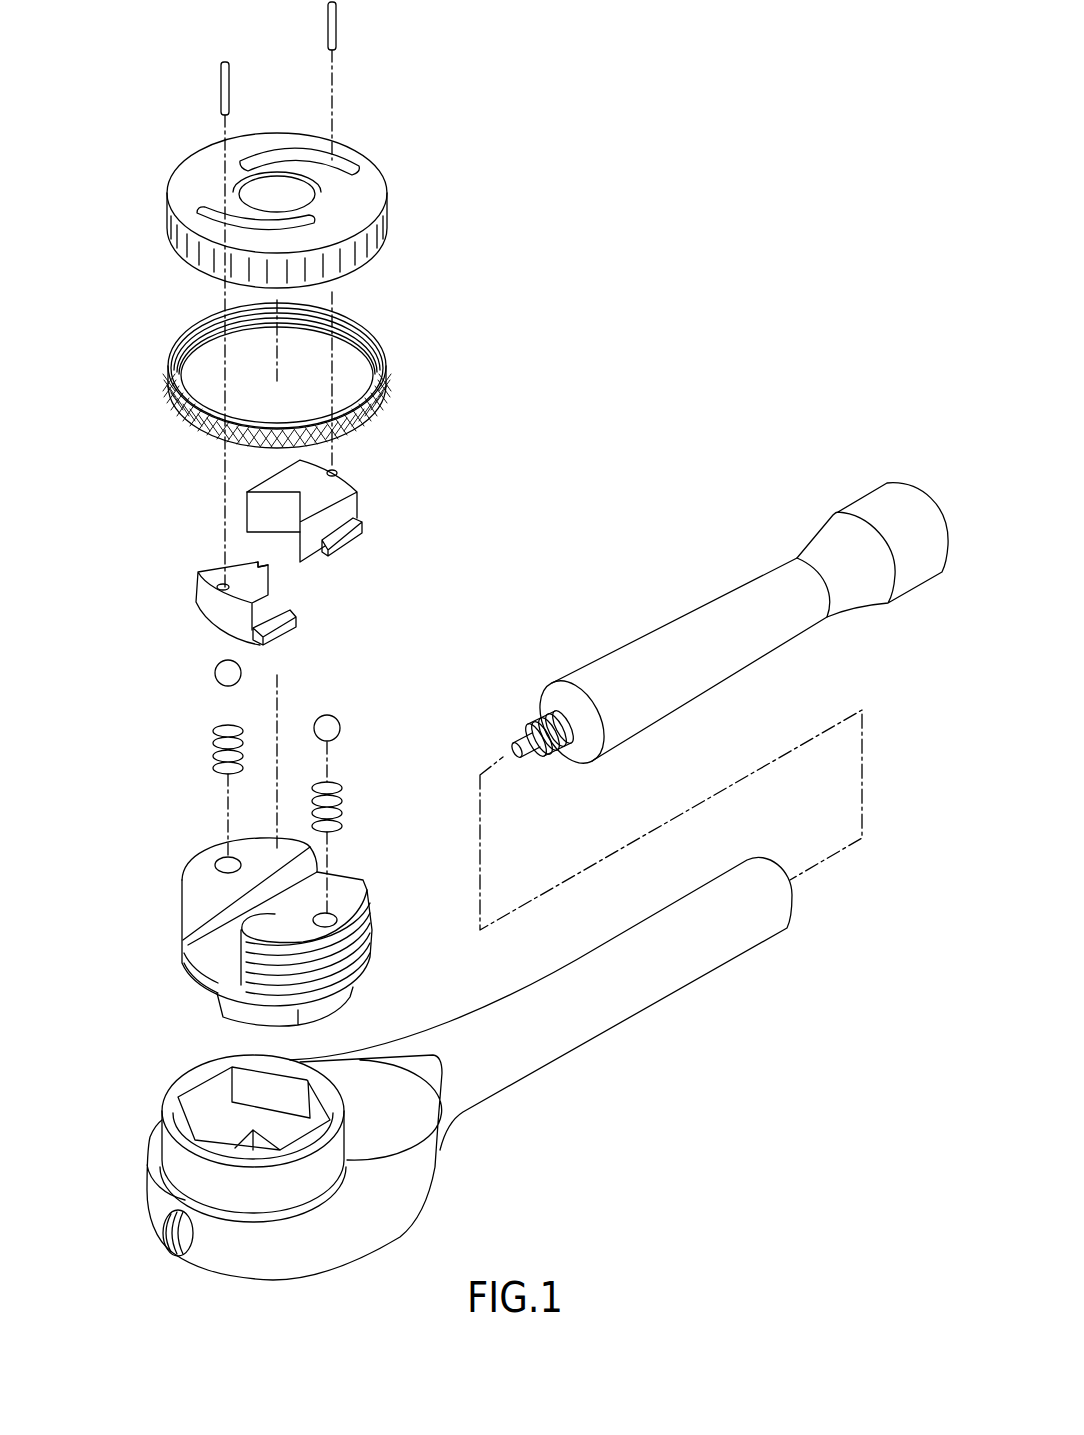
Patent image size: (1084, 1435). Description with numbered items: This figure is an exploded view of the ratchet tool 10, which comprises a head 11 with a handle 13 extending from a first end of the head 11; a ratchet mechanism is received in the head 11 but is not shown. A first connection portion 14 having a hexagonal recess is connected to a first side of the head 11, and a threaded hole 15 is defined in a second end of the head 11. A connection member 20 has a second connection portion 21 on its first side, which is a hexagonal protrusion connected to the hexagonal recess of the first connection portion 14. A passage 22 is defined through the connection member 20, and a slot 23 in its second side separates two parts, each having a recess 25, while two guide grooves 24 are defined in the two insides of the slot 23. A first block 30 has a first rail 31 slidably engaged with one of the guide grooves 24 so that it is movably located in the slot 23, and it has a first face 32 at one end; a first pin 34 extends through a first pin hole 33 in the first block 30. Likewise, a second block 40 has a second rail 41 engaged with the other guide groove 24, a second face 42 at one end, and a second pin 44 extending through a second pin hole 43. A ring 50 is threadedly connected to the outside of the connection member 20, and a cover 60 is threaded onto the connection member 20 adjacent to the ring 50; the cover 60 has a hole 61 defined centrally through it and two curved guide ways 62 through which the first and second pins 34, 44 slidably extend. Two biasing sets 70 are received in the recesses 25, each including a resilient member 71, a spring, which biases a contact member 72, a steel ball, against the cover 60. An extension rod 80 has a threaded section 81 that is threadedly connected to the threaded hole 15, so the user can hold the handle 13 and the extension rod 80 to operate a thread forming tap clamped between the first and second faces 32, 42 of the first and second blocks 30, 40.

The ratchet tool 10 is at (440, 1082).
The head 11 is at (367, 1222).
The handle 13 is at (534, 1112).
The first connection portion 14 is at (178, 1168).
The threaded hole 15 is at (173, 1242).
The connection member 20 is at (279, 932).
The second connection portion 21 is at (335, 1003).
The passage 22 is at (315, 868).
The slot 23 is at (215, 905).
The guide grooves 24 is at (190, 940).
The recess 25 is at (365, 888).
The first block 30 is at (311, 495).
The first rail 31 is at (350, 538).
The first face 32 is at (262, 508).
The first pin hole 33 is at (334, 470).
The first pin 34 is at (337, 22).
The second block 40 is at (254, 594).
The second rail 41 is at (292, 622).
The second face 42 is at (270, 563).
The second pin hole 43 is at (220, 579).
The second pin 44 is at (222, 82).
The ring 50 is at (388, 352).
The cover 60 is at (333, 191).
The hole 61 is at (318, 188).
The guide ways 62 is at (350, 163).
The biasing sets 70 is at (244, 782).
The resilient member 71 is at (340, 798).
The contact member 72 is at (338, 722).
The extension rod 80 is at (729, 628).
The threaded section 81 is at (537, 725).